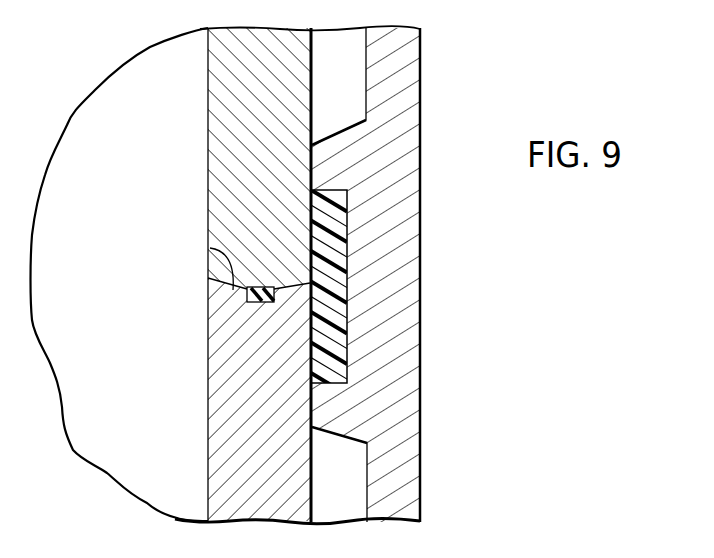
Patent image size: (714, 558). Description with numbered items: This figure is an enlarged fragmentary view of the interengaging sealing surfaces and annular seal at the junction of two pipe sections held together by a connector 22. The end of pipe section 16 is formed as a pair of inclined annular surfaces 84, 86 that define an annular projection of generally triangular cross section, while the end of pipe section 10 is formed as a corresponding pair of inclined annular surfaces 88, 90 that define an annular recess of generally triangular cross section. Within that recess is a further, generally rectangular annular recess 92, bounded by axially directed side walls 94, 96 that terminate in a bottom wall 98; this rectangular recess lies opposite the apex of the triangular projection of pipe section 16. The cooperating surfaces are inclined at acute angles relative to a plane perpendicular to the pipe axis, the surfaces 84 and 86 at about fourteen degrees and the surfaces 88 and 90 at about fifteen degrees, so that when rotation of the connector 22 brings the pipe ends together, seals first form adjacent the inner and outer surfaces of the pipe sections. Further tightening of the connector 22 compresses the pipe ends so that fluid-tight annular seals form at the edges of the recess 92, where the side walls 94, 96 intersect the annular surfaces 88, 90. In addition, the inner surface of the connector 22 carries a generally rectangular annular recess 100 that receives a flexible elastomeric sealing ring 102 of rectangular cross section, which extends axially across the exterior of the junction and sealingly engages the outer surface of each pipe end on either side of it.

The pipe section 10 is at (230, 462).
The pipe section 16 is at (228, 121).
The connector 22 is at (398, 71).
The inclined annular surface 84 is at (210, 248).
The inclined annular surface 86 is at (305, 283).
The inclined annular surface 88 is at (247, 293).
The inclined annular surface 90 is at (337, 297).
The rectangular annular recess 92 is at (266, 303).
The side wall 94 is at (243, 302).
The side wall 96 is at (330, 320).
The bottom wall 98 is at (252, 303).
The rectangular annular recess 100 is at (347, 253).
The sealing ring 102 is at (335, 230).